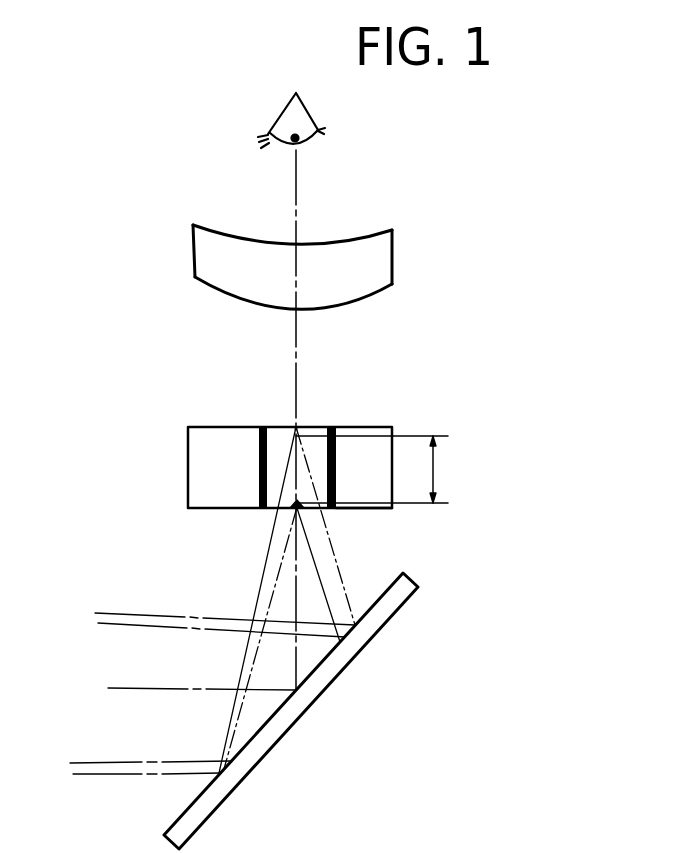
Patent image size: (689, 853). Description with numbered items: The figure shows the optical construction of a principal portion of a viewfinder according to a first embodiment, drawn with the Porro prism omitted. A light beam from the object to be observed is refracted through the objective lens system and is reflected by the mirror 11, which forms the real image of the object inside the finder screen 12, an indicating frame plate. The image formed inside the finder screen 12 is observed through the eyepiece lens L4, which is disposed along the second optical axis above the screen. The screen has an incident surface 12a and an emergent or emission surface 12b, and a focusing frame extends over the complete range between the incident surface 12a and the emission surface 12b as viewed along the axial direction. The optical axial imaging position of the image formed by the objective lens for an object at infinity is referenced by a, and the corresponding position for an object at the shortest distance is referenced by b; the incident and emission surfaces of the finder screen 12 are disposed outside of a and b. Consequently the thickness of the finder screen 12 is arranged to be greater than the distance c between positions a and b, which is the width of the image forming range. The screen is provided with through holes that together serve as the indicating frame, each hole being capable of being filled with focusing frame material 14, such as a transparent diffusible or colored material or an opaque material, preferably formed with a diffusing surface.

The mirror 11 is at (353, 648).
The finder screen 12 is at (207, 477).
The incident surface 12a is at (347, 427).
The emission surface 12b is at (343, 508).
The focusing frame material 14 is at (265, 427).
The eyepiece lens L4 is at (392, 281).
The imaging position for object at infinity a is at (294, 509).
The imaging position at shortest distance b is at (297, 427).
The image forming range c is at (433, 470).